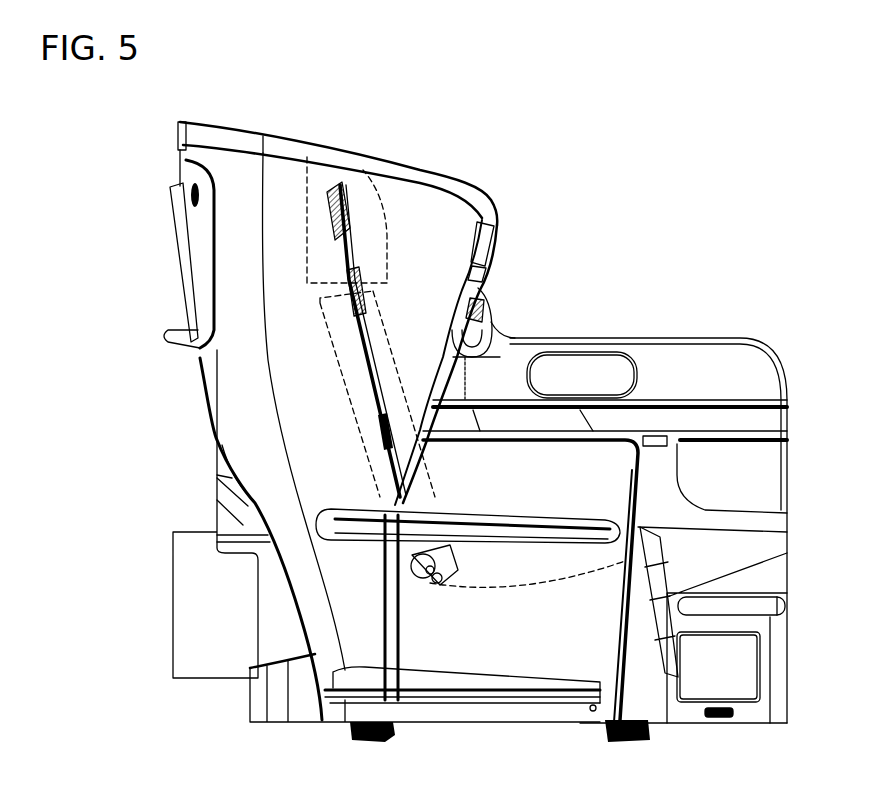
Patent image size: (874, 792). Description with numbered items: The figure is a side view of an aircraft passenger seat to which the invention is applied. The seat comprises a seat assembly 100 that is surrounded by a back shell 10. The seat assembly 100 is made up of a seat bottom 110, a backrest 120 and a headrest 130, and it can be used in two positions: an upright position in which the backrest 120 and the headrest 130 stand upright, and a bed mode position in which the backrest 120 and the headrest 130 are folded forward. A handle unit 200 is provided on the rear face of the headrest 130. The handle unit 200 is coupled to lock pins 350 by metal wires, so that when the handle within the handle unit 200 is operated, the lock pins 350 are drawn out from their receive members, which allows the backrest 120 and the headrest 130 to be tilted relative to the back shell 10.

The back shell 10 is at (390, 184).
The seat assembly 100 is at (423, 343).
The seat bottom 110 is at (622, 520).
The backrest 120 is at (370, 348).
The headrest 130 is at (350, 270).
The handle unit 200 is at (327, 197).
The lock pins 350 is at (420, 542).